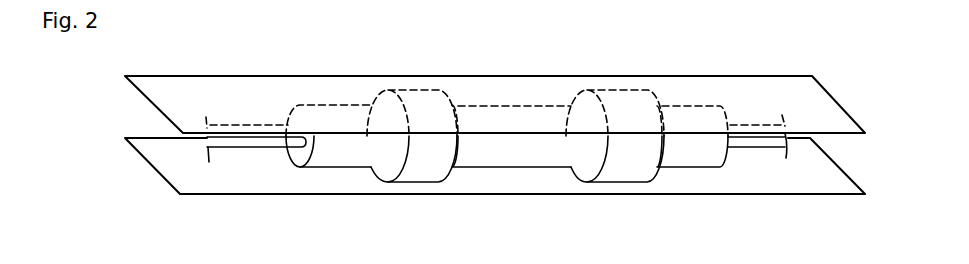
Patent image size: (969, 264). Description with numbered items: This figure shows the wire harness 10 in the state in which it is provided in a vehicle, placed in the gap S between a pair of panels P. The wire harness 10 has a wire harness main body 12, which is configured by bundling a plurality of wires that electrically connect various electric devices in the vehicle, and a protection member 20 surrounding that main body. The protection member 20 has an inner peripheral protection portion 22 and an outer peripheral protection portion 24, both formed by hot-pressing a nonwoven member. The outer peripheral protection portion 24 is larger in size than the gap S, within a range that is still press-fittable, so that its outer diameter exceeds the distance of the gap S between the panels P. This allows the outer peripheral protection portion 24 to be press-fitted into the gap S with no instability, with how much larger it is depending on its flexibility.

The panel P is at (825, 102).
The gap S is at (812, 187).
The wire harness 10 is at (507, 168).
The wire harness main body 12 is at (760, 147).
The protection member 20 is at (493, 170).
The inner peripheral protection portion 22 is at (682, 168).
The outer peripheral protection portion 24 is at (413, 182).